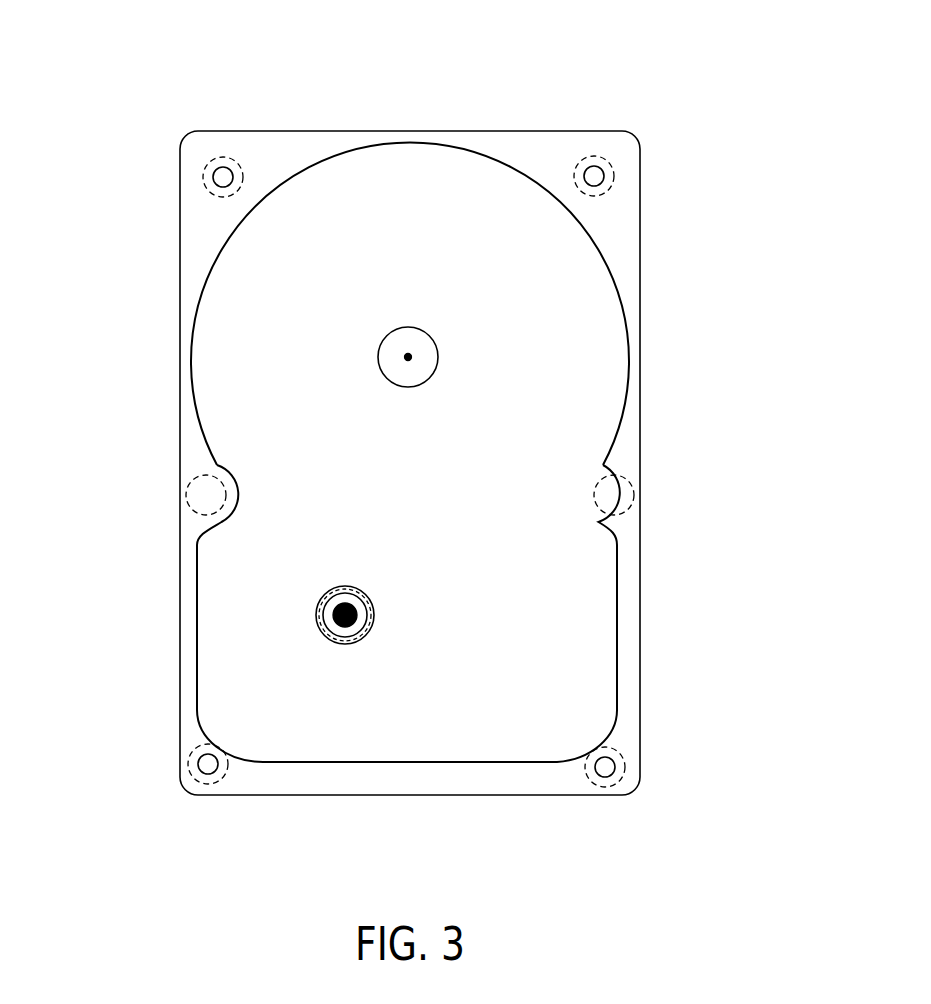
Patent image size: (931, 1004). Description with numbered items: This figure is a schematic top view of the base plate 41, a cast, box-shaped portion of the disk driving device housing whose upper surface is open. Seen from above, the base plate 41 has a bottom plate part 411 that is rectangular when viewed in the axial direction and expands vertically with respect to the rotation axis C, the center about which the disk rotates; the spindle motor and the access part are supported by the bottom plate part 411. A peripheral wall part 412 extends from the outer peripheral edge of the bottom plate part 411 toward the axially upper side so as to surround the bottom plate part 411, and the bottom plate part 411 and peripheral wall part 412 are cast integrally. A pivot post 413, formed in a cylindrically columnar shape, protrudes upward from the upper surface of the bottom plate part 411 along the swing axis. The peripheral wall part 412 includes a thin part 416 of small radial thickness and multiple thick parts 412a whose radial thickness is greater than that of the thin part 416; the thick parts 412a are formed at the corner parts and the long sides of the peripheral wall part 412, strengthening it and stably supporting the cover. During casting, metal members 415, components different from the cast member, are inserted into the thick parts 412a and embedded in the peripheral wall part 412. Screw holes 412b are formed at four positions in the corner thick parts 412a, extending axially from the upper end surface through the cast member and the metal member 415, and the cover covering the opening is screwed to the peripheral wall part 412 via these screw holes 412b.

The base plate 41 is at (623, 82).
The bottom plate part 411 is at (240, 442).
The peripheral wall part 412 is at (197, 255).
The thick part 412a is at (198, 155).
The screw hole 412b is at (213, 174).
The pivot post 413 is at (358, 627).
The metal member 415 is at (233, 152).
The thin part 416 is at (187, 313).
The rotation axis C is at (408, 357).